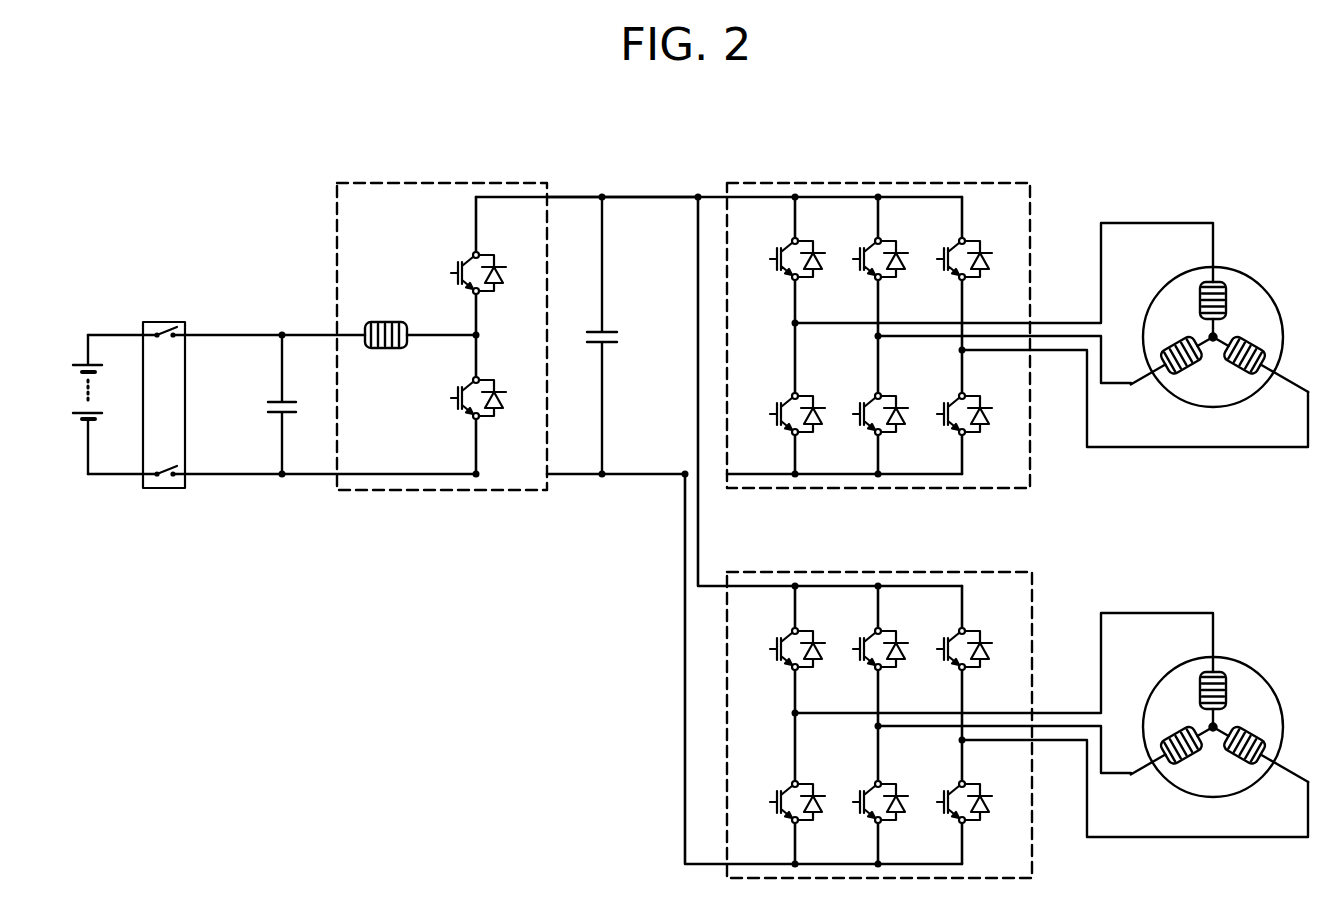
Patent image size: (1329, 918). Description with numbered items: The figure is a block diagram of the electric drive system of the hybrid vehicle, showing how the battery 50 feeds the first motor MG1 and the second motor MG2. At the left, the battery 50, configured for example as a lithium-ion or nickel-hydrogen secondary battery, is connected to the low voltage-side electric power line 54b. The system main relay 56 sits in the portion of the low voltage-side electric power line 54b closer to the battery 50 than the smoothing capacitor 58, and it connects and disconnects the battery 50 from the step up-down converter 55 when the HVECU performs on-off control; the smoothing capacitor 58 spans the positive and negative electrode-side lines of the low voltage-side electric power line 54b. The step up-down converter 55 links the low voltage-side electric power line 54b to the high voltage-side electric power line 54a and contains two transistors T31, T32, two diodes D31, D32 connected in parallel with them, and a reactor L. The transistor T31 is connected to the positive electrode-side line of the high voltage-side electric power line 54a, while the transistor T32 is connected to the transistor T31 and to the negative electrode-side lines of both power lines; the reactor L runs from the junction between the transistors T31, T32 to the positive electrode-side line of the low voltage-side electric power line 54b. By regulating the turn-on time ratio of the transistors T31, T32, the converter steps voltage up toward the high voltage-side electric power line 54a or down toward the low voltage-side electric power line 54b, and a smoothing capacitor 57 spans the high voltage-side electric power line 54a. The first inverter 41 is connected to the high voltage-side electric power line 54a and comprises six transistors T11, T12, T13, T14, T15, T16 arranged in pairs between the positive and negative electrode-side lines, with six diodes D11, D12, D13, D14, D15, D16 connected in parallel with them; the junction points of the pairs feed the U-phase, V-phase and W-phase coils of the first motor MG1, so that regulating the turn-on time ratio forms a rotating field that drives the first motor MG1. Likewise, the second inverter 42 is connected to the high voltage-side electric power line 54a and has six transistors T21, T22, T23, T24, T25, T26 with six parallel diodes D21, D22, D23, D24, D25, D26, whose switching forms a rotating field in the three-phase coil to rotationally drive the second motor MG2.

The battery 50 is at (81, 362).
The system main relay 56 is at (165, 322).
The low voltage-side electric power line 54b is at (240, 335).
The smoothing capacitor 58 is at (288, 397).
The step up-down converter 55 is at (442, 311).
The reactor L is at (383, 327).
The transistor T31 is at (454, 269).
The diode D31 is at (497, 282).
The transistor T32 is at (454, 394).
The diode D32 is at (497, 407).
The smoothing capacitor 57 is at (612, 327).
The high voltage-side electric power line 54a is at (670, 197).
The first inverter 41 is at (878, 310).
The transistor T11 is at (773, 255).
The transistor T12 is at (856, 255).
The transistor T13 is at (940, 255).
The transistor T14 is at (773, 410).
The transistor T15 is at (856, 410).
The transistor T16 is at (940, 410).
The diode D11 is at (816, 268).
The diode D12 is at (899, 268).
The diode D13 is at (983, 268).
The diode D14 is at (816, 423).
The diode D15 is at (899, 423).
The diode D16 is at (983, 423).
The first motor MG1 is at (1243, 270).
The second inverter 42 is at (879, 700).
The transistor T21 is at (773, 645).
The transistor T22 is at (856, 645).
The transistor T23 is at (940, 645).
The transistor T24 is at (773, 798).
The transistor T25 is at (856, 798).
The transistor T26 is at (940, 798).
The diode D21 is at (816, 658).
The diode D22 is at (899, 658).
The diode D23 is at (983, 658).
The diode D24 is at (816, 811).
The diode D25 is at (899, 811).
The diode D26 is at (983, 811).
The second motor MG2 is at (1243, 660).